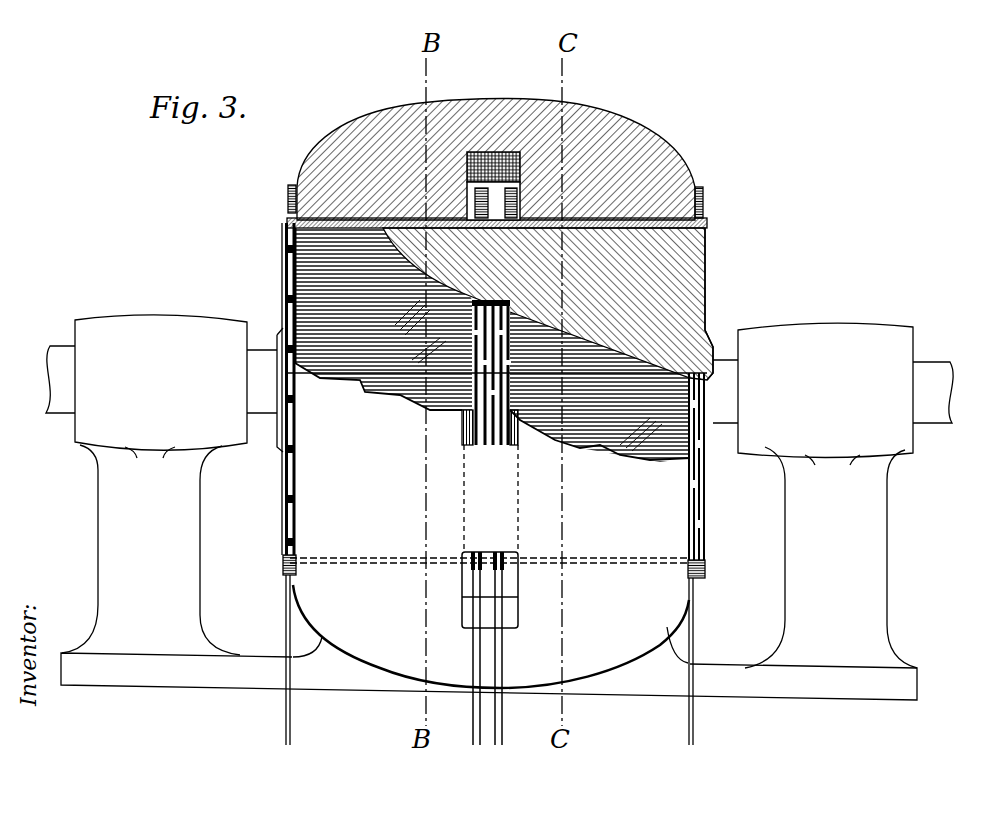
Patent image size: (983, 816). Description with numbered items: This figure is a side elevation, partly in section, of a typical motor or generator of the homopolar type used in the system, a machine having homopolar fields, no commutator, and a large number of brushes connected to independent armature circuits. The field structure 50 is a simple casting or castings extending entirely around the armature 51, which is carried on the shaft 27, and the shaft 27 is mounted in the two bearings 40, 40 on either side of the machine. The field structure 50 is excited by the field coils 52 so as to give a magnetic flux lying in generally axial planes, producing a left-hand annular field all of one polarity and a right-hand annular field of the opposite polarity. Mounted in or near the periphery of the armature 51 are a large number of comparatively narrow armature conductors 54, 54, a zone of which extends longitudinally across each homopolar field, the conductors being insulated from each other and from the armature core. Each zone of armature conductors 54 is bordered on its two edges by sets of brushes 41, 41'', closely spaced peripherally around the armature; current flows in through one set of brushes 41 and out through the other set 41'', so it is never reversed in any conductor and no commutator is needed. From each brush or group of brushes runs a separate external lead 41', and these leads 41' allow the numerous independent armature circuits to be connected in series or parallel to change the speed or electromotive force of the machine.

The shaft 27 is at (52, 352).
The bearing 40 is at (128, 327).
The brush set 41 is at (510, 380).
The external lead 41' is at (503, 408).
The brush set 41'' is at (569, 331).
The field structure 50 is at (608, 138).
The armature 51 is at (283, 298).
The field coil 52 is at (512, 152).
The armature conductor 54 is at (288, 243).